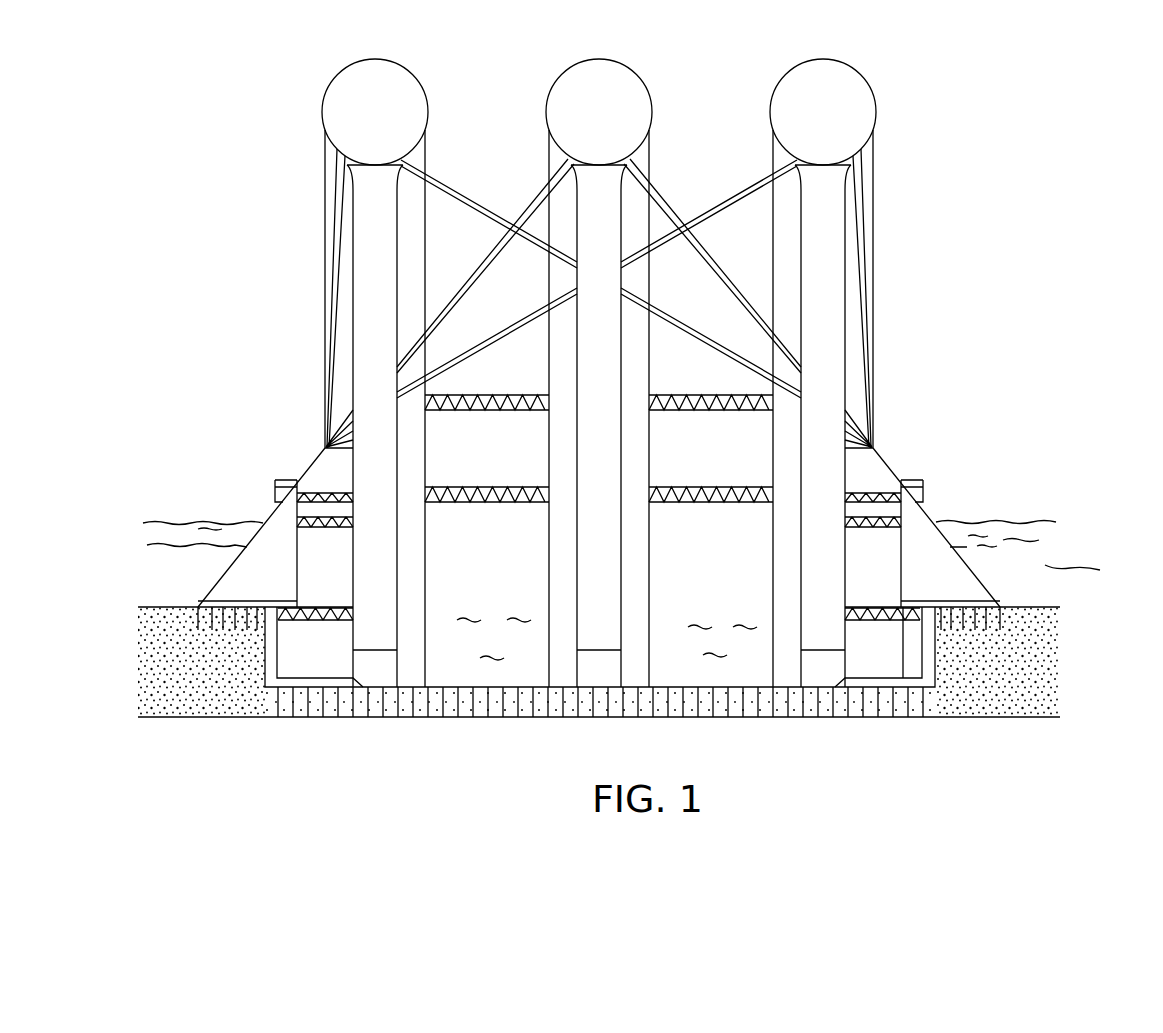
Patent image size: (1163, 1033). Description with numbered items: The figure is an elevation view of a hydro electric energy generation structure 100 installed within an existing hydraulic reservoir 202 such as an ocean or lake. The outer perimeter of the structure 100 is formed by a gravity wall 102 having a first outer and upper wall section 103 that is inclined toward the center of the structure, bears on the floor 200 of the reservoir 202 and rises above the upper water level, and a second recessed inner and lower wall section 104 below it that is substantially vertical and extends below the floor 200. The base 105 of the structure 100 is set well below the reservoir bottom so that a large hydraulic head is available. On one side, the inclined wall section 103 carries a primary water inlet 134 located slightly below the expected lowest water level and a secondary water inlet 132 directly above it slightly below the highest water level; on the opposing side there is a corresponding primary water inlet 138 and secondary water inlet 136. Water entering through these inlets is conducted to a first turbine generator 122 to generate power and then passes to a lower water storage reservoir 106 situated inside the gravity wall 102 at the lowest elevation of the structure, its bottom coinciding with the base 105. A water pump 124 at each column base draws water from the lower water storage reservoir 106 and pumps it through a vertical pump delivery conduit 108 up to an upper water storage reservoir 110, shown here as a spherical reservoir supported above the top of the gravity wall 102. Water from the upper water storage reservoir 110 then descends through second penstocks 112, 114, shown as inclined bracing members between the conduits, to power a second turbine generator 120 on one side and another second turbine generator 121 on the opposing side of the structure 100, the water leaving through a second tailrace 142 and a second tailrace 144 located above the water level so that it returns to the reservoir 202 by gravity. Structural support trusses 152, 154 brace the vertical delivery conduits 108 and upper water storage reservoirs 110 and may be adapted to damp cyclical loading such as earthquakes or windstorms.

The hydro electric energy generation structure 100 is at (760, 45).
The gravity wall 102 is at (275, 530).
The first outer and upper wall section 103 is at (213, 583).
The second recessed inner and lower wall section 104 is at (263, 677).
The base 105 is at (670, 720).
The lower water storage reservoir 106 is at (513, 673).
The pump delivery conduit 108 is at (367, 213).
The upper water storage reservoir 110 is at (409, 116).
The second penstock 112 is at (493, 250).
The second penstock 114 is at (452, 186).
The second turbine generator 120 is at (313, 478).
The second turbine generator 121 is at (880, 475).
The first turbine generator 122 is at (340, 590).
The water pump 124 is at (400, 668).
The secondary water inlet 132 is at (248, 519).
The primary water inlet 134 is at (233, 547).
The secondary water inlet 136 is at (955, 510).
The primary water inlet 138 is at (968, 546).
The second tailrace 142 is at (282, 482).
The second tailrace 144 is at (918, 480).
The structural support truss 152 is at (470, 411).
The structural support truss 154 is at (470, 486).
The floor of hydraulic reservoir 200 is at (152, 641).
The hydraulic reservoir 202 is at (157, 567).